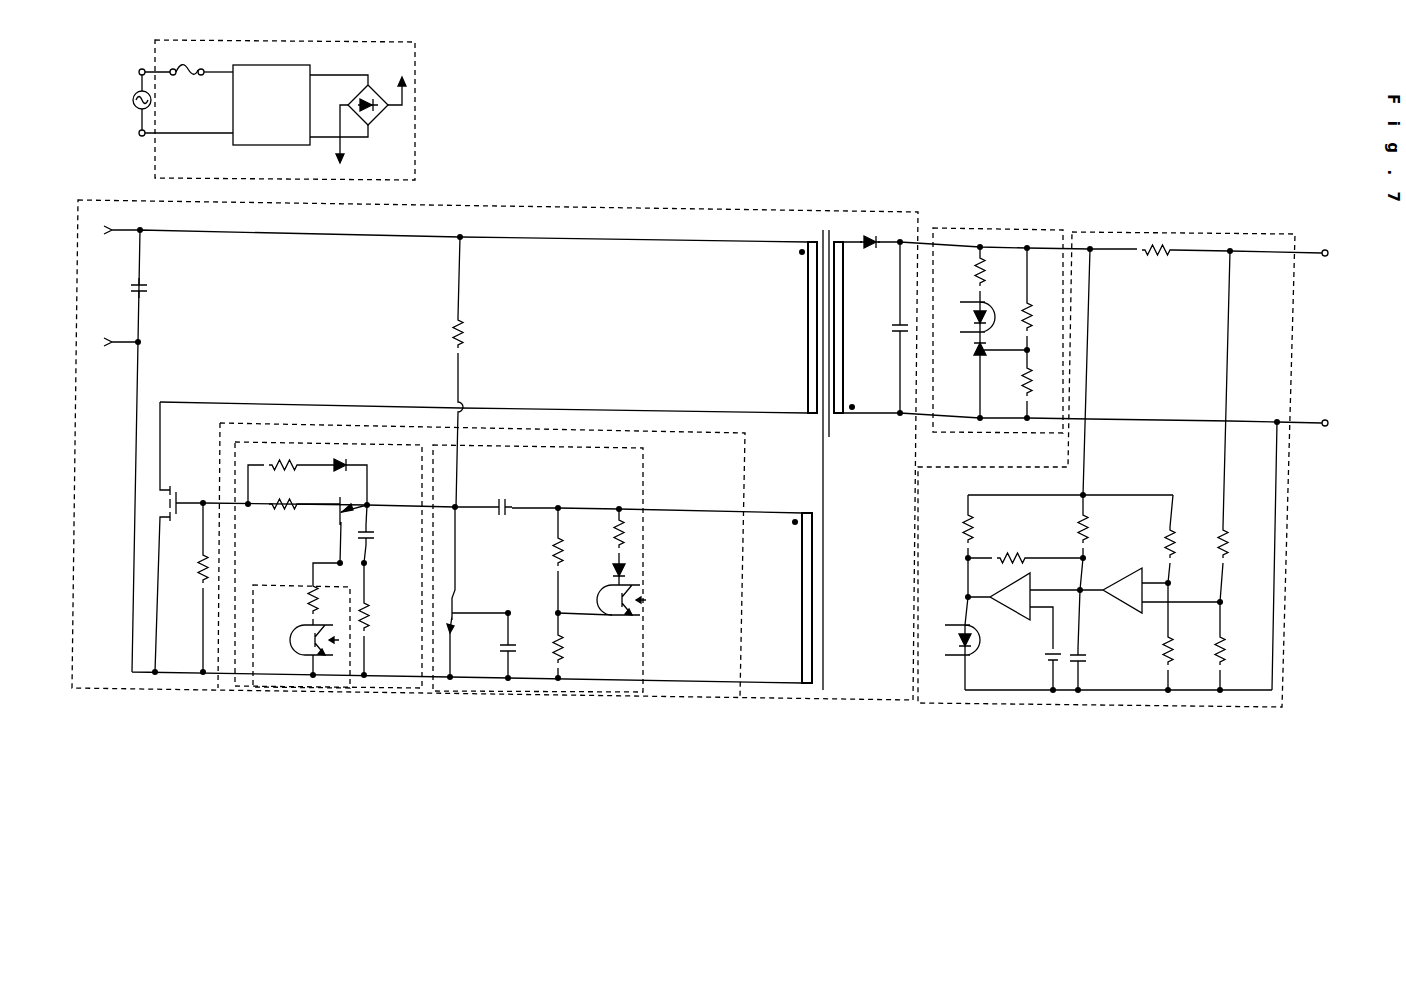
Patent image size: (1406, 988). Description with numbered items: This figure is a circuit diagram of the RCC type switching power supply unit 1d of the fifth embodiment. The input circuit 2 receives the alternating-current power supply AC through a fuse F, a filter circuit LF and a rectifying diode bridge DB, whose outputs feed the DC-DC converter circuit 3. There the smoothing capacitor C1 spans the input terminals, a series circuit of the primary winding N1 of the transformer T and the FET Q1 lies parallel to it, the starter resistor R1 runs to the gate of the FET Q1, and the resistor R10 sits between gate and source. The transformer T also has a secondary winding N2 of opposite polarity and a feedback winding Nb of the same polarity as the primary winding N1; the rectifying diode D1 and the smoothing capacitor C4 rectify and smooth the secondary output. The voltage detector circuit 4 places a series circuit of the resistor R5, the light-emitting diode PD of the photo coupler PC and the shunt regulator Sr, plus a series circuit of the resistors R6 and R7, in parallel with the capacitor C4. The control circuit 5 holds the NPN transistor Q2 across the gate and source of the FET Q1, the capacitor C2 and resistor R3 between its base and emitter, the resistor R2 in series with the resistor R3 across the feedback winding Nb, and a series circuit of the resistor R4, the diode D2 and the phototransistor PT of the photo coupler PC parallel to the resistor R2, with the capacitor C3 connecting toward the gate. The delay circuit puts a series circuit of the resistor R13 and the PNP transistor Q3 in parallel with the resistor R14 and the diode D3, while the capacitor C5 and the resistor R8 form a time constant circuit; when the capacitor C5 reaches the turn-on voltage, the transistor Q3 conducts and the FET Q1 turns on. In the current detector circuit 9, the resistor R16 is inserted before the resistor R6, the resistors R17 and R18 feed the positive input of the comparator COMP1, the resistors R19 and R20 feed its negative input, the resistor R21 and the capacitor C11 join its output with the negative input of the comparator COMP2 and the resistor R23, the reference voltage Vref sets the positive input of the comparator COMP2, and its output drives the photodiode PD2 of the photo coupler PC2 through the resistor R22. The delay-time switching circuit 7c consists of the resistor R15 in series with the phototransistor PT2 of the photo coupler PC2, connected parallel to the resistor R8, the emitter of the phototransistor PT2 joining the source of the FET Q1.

The switching power supply unit 1d is at (1211, 100).
The input circuit 2 is at (420, 130).
The DC-DC converter circuit 3 is at (698, 226).
The voltage detector circuit 4 is at (1000, 230).
The control circuit 5 is at (521, 693).
The delay-time switching circuit 7c is at (273, 690).
The current detector circuit 9 is at (1200, 232).
The alternating-current power supply AC is at (128, 102).
The fuse F is at (187, 61).
The filter circuit LF is at (271, 105).
The rectifying diode bridge DB is at (349, 94).
The smoothing capacitor C1 is at (127, 283).
The MOS field-effect transistor Q1 is at (169, 537).
The resistor R10 is at (184, 587).
The starter resistor R1 is at (469, 372).
The resistor R14 is at (289, 482).
The diode D3 is at (349, 476).
The resistor R13 is at (303, 513).
The PNP transistor Q3 is at (339, 523).
The capacitor C5 is at (386, 535).
The resistor R15 is at (307, 594).
The resistor R8 is at (378, 619).
The photo coupler PC2 is at (298, 650).
The phototransistor PT2 is at (316, 650).
The NPN transistor Q2 is at (477, 592).
The capacitor C2 is at (492, 645).
The resistor R2 is at (546, 560).
The resistor R3 is at (572, 645).
The capacitor C3 is at (500, 517).
The resistor R4 is at (606, 534).
The diode D2 is at (605, 572).
The photo coupler PC is at (602, 611).
The phototransistor PT is at (602, 611).
The transformer T is at (830, 456).
The primary winding N1 is at (798, 327).
The secondary winding N2 is at (852, 327).
The feedback winding Nb is at (814, 581).
The rectifying diode D1 is at (870, 236).
The smoothing capacitor C4 is at (886, 327).
The resistor R5 is at (993, 274).
The light-emitting diode PD is at (965, 312).
The shunt regulator Sr is at (985, 378).
The resistor R6 is at (1039, 299).
The resistor R7 is at (1039, 384).
The resistor R16 is at (1156, 261).
The resistor R17 is at (1240, 426).
The resistor R18 is at (1238, 646).
The resistor R19 is at (1187, 539).
The resistor R20 is at (1186, 636).
The resistor R21 is at (1100, 526).
The resistor R22 is at (950, 546).
The resistor R23 is at (1025, 547).
The capacitor C11 is at (1096, 659).
The comparator COMP1 is at (1150, 581).
The comparator COMP2 is at (1024, 611).
The reference voltage Vref is at (1035, 663).
The photodiode PD2 is at (949, 643).